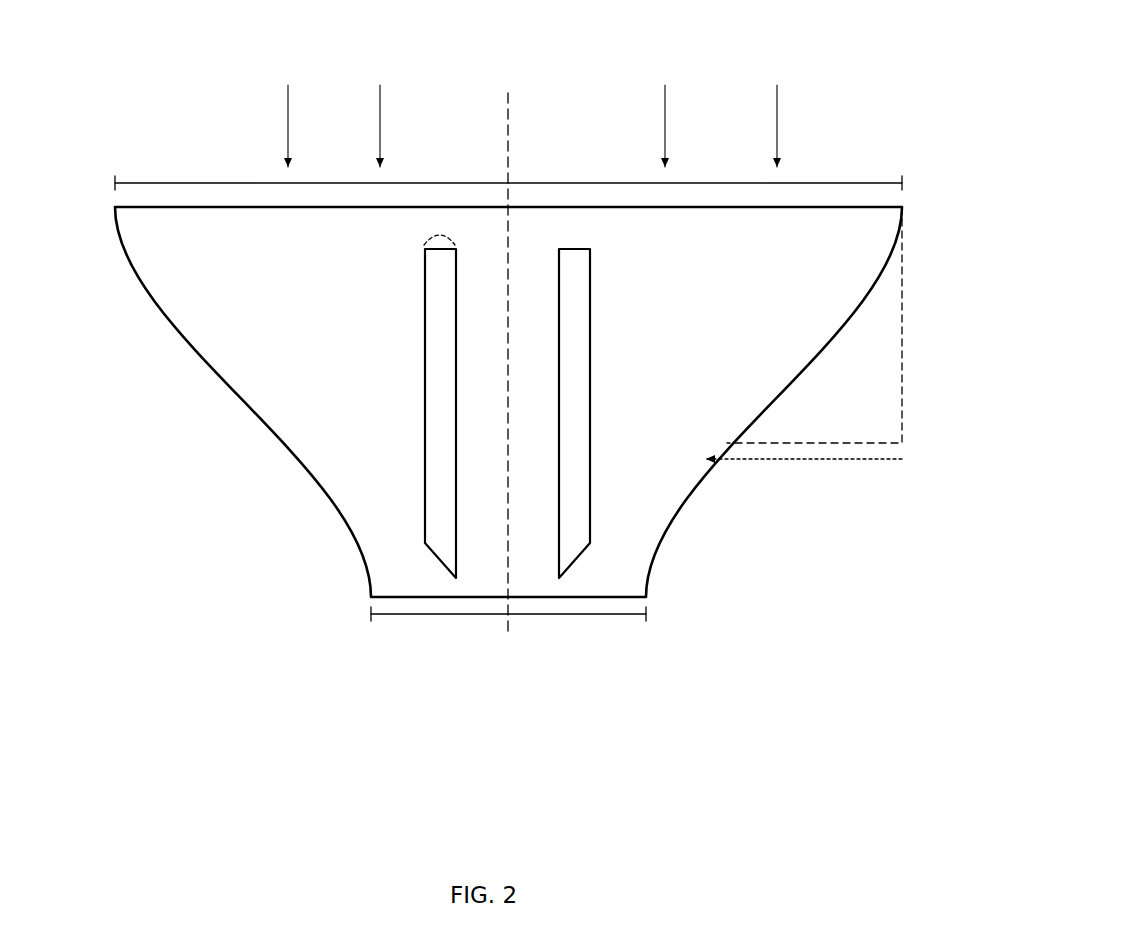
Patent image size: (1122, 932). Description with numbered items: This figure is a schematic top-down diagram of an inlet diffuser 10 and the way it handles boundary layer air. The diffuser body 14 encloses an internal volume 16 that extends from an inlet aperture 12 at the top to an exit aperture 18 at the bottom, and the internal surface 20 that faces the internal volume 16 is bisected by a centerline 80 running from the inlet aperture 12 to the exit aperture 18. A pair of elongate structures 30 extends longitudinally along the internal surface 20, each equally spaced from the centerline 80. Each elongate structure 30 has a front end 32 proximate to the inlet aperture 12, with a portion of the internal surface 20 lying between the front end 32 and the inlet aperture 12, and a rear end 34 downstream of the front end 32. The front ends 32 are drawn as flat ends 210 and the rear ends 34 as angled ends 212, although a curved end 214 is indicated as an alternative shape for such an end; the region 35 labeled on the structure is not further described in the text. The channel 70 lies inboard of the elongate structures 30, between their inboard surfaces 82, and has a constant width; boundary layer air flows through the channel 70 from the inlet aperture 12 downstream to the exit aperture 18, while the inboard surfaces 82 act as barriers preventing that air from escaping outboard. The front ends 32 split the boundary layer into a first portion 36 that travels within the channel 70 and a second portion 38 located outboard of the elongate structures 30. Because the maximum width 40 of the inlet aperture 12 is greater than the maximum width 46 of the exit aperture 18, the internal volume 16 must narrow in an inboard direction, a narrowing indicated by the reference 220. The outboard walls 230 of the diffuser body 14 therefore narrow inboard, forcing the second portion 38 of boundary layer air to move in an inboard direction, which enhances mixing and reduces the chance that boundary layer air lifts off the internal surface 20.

The inlet diffuser 10 is at (135, 157).
The inlet aperture 12 is at (808, 207).
The diffuser body 14 is at (237, 328).
The internal volume 16 is at (688, 275).
The exit aperture 18 is at (425, 600).
The internal surface 20 is at (387, 250).
The elongate structures 30 is at (573, 385).
The front end 32 is at (442, 269).
The rear end 34 is at (438, 515).
The blade upper portion 35 is at (442, 352).
The first portion of boundary layer air 36 is at (555, 372).
The second portion of boundary layer air 38 is at (367, 328).
The maximum width 40 is at (867, 182).
The maximum width 46 is at (448, 616).
The channel 70 is at (488, 440).
The centerline 80 is at (508, 197).
The inboard surface 82 is at (457, 407).
The flat end 210 is at (568, 249).
The angled end 212 is at (578, 558).
The curved end 214 is at (443, 233).
The narrowing of the internal volume 220 is at (808, 461).
The outboard walls 230 is at (168, 328).